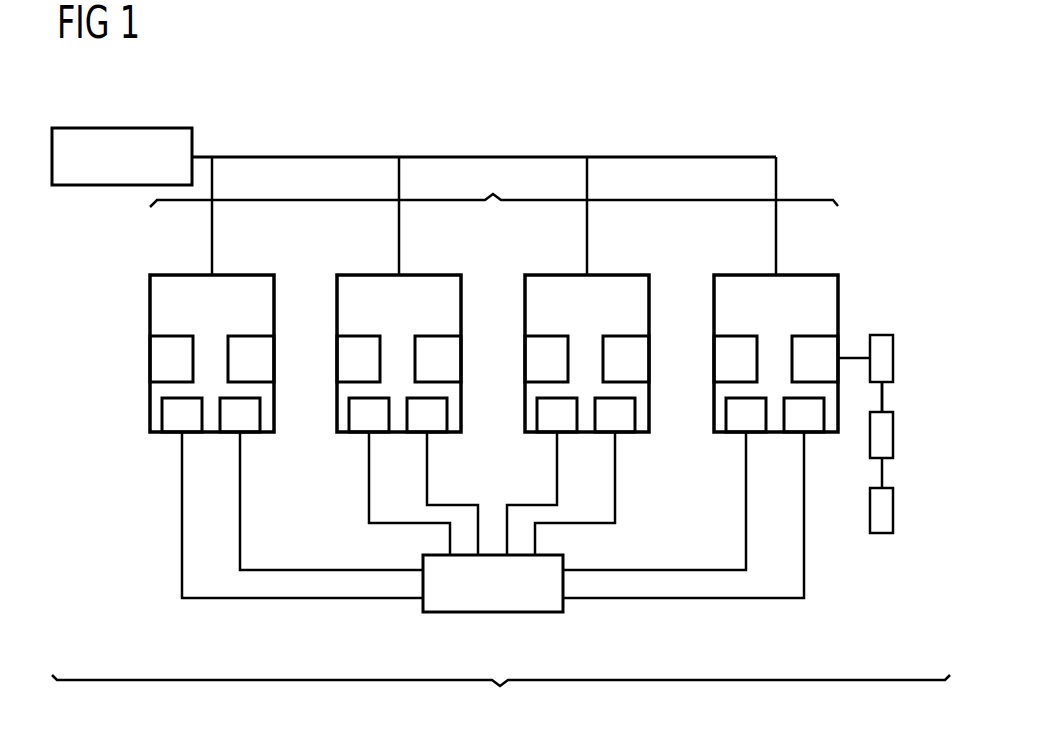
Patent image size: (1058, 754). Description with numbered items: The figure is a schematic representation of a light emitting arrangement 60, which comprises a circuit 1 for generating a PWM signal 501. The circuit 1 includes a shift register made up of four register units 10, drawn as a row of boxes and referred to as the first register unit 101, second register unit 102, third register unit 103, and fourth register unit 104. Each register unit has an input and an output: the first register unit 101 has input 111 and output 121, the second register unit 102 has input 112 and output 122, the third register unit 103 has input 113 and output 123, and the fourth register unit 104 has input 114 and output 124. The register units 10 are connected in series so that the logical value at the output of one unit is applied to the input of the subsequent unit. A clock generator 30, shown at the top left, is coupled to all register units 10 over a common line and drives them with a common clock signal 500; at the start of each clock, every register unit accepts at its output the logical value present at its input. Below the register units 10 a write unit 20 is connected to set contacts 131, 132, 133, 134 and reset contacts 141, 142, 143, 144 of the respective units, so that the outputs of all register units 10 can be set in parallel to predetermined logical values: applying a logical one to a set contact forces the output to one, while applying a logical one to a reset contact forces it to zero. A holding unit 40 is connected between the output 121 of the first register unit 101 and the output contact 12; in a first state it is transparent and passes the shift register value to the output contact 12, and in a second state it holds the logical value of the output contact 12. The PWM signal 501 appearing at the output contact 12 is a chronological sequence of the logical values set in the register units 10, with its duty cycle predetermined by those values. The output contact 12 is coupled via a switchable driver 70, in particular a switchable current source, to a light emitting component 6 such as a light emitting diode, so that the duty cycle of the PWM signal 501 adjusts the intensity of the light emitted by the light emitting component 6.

The circuit 1 is at (780, 128).
The clock generator 30 is at (120, 127).
The clock signal 500 is at (548, 157).
The register units 10 is at (494, 185).
The fourth register unit 104 is at (215, 273).
The third register unit 103 is at (402, 273).
The second register unit 102 is at (590, 273).
The first register unit 101 is at (779, 273).
The input of the fourth register unit 114 is at (172, 345).
The input of the third register unit 113 is at (359, 345).
The input of the second register unit 112 is at (547, 345).
The input of the first register unit 111 is at (736, 345).
The output of the fourth register unit 124 is at (252, 345).
The output of the third register unit 123 is at (439, 345).
The output of the second register unit 122 is at (627, 345).
The output of the first register unit 121 is at (816, 345).
The set contact of the fourth register unit 134 is at (170, 425).
The set contact of the third register unit 133 is at (357, 425).
The set contact of the second register unit 132 is at (545, 425).
The set contact of the first register unit 131 is at (734, 425).
The reset contact of the fourth register unit 144 is at (252, 425).
The reset contact of the third register unit 143 is at (439, 425).
The reset contact of the second register unit 142 is at (627, 425).
The reset contact of the first register unit 141 is at (816, 425).
The write unit 20 is at (493, 612).
The holding unit 40 is at (880, 335).
The PWM signal 501 is at (885, 395).
The output contact 12 is at (885, 405).
The switchable driver 70 is at (893, 437).
The light emitting component 6 is at (893, 510).
The light emitting arrangement 60 is at (501, 697).